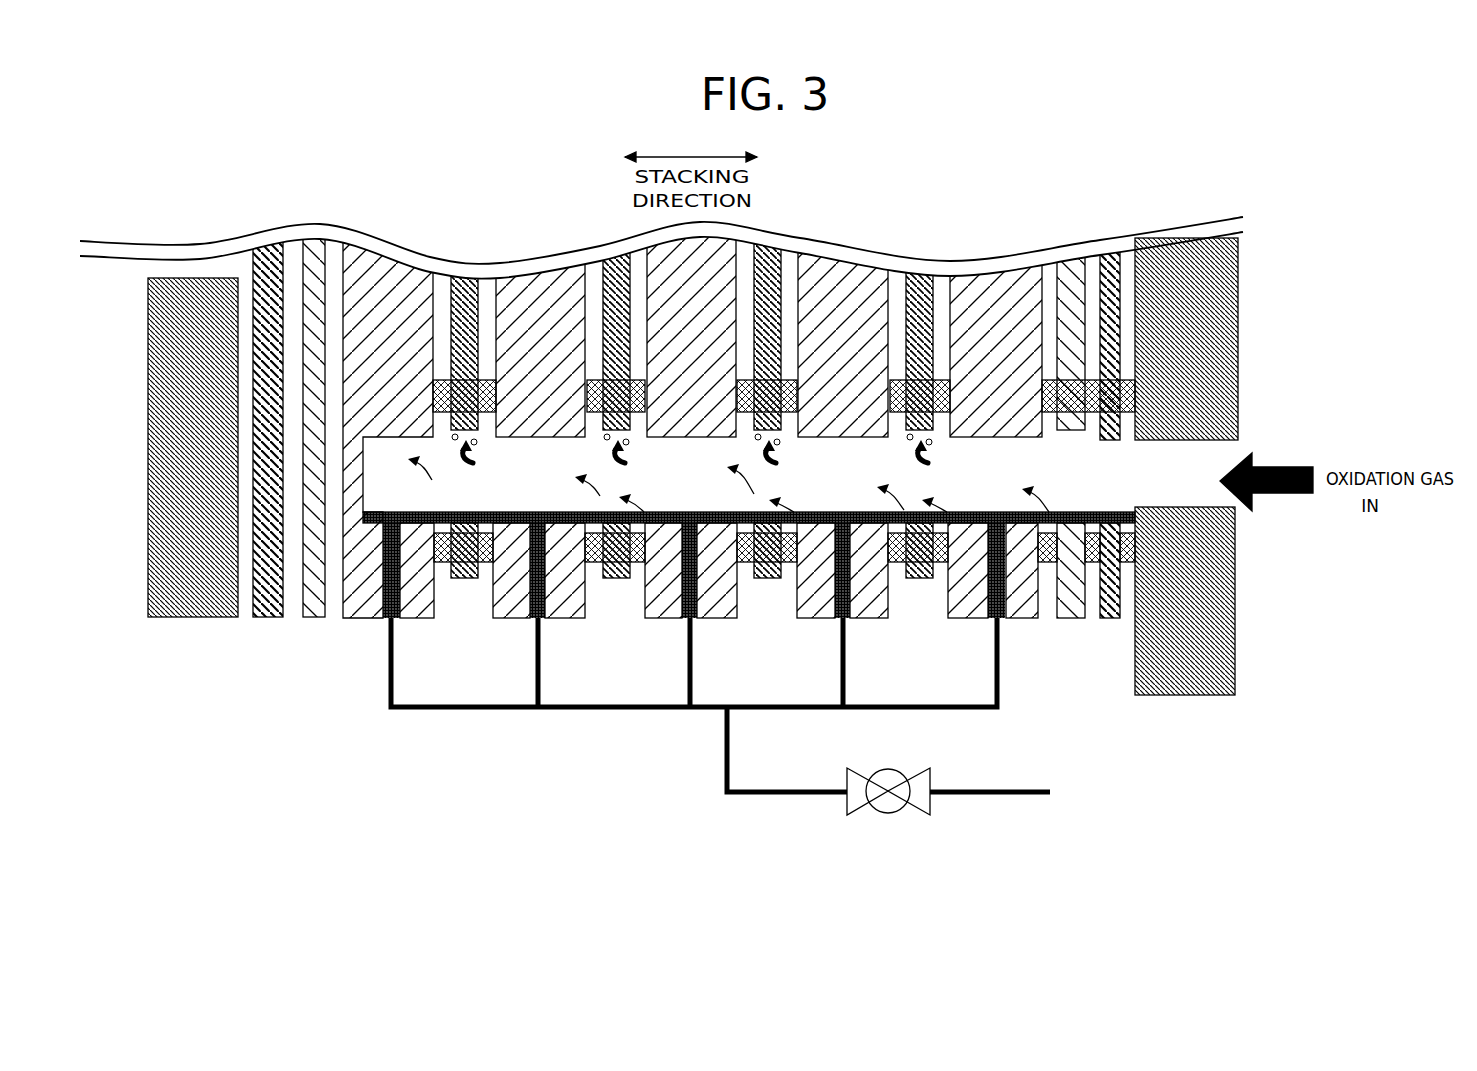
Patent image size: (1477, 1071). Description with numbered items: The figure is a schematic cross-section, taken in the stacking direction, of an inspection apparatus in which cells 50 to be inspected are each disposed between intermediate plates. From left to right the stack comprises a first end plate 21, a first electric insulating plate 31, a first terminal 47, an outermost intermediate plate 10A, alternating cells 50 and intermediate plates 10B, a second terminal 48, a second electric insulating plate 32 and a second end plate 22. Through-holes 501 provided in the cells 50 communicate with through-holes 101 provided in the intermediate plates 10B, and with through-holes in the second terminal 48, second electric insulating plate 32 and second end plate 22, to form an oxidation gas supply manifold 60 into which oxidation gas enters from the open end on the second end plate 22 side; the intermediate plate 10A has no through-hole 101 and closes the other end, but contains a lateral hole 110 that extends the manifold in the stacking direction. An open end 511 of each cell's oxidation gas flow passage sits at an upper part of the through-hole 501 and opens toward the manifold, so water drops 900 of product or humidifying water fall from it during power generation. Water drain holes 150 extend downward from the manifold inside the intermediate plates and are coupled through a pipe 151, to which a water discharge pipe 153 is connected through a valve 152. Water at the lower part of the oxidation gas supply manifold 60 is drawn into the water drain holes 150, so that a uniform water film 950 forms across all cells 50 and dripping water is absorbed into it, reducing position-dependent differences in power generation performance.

The first end plate 21 is at (162, 619).
The first electric insulating plate 31 is at (261, 619).
The first terminal 47 is at (308, 619).
The intermediate plate 10A is at (347, 623).
The intermediate plate 10B is at (504, 620).
The water drain hole 150 is at (395, 612).
The through-hole 101 is at (597, 567).
The through-hole 501 is at (489, 565).
The cell 50 is at (466, 579).
The pipe 151 is at (495, 708).
The valve 152 is at (882, 813).
The water discharge pipe 153 is at (1020, 795).
The open end 511 is at (478, 444).
The lateral hole 110 is at (420, 462).
The water drops 900 is at (906, 437).
The oxidation gas supply manifold 60 is at (1075, 467).
The water film 950 is at (1072, 512).
The second terminal 48 is at (1071, 620).
The second electric insulating plate 32 is at (1110, 620).
The second end plate 22 is at (1178, 696).